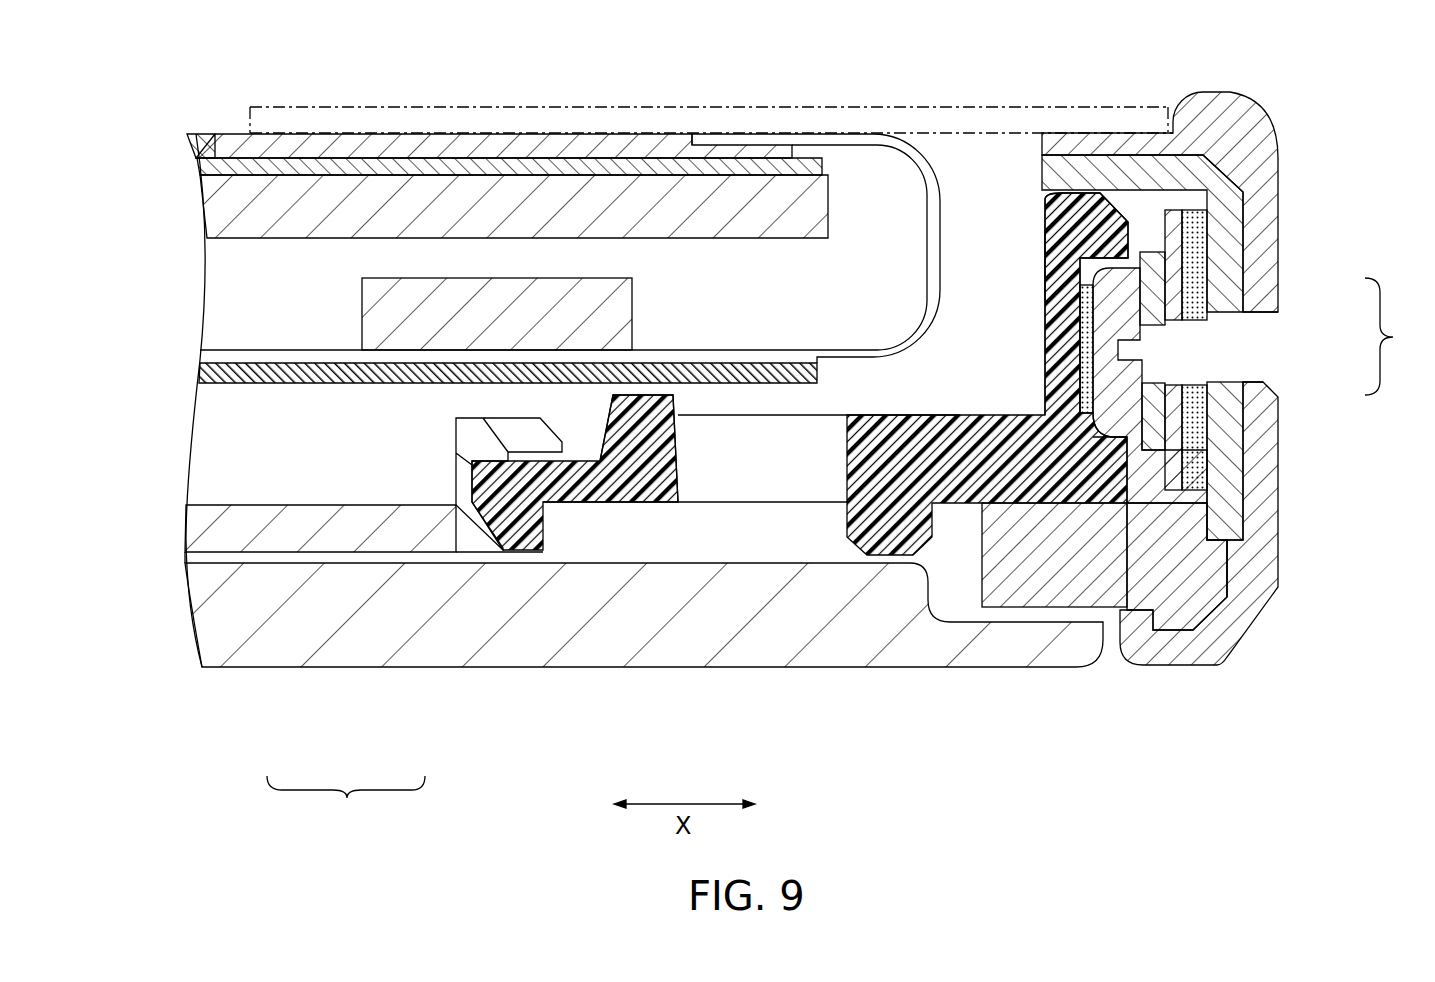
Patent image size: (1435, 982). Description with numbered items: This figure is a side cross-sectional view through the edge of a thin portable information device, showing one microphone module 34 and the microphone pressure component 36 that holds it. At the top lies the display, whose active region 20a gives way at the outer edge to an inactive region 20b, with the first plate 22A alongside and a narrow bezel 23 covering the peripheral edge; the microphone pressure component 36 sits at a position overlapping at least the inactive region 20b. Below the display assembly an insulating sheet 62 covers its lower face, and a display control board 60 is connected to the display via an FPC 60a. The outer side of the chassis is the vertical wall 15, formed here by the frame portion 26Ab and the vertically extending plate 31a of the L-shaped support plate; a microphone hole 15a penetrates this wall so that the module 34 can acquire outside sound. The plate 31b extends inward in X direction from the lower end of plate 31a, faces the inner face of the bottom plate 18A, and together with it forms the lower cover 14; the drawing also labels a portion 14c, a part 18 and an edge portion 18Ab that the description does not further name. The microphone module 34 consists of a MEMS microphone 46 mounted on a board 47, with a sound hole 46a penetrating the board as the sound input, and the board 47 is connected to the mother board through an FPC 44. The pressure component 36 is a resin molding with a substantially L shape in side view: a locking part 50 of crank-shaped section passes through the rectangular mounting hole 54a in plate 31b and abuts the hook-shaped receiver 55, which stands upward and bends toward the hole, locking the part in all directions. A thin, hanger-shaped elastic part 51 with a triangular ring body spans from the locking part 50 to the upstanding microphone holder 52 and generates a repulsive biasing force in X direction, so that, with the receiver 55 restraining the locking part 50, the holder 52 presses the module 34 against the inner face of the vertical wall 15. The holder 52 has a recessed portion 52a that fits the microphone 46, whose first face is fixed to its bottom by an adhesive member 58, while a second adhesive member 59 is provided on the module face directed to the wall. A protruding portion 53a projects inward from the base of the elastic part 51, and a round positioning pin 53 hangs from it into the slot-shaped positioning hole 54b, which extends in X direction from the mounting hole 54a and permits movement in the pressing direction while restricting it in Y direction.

The lower cover 14 is at (346, 803).
The frame portion 14c is at (1245, 205).
The vertical wall 15 is at (1398, 336).
The microphone hole 15a is at (1223, 381).
The display panel 18 is at (428, 128).
The bottom plate 18A is at (397, 652).
The edge portion of substrate 18Ab is at (228, 568).
The active region 20a is at (190, 134).
The inactive region 20b is at (356, 150).
The first plate 22A is at (245, 232).
The bezel 23 is at (630, 107).
The frame portion 26Ab is at (1200, 302).
The plate 31a is at (1200, 425).
The plate 31b is at (307, 540).
The microphone module 34 is at (1108, 482).
The microphone pressure component 36 is at (637, 512).
The FPC 44 is at (1280, 177).
The microphone 46 is at (1130, 287).
The sound hole 46a is at (1137, 450).
The board 47 is at (1165, 520).
The locking part 50 is at (520, 533).
The elastic part 51 is at (765, 485).
The microphone holder 52 is at (1048, 262).
The recessed portion 52a is at (1053, 268).
The positioning pin 53 is at (888, 543).
The protruding portion 53a is at (896, 430).
The mounting hole 54a is at (693, 522).
The positioning hole 54b is at (957, 523).
The receiver 55 is at (473, 440).
The adhesive member 58 is at (1082, 345).
The adhesive member 59 is at (1190, 262).
The display control board 60 is at (380, 306).
The FPC 60a is at (943, 232).
The insulating sheet 62 is at (237, 384).